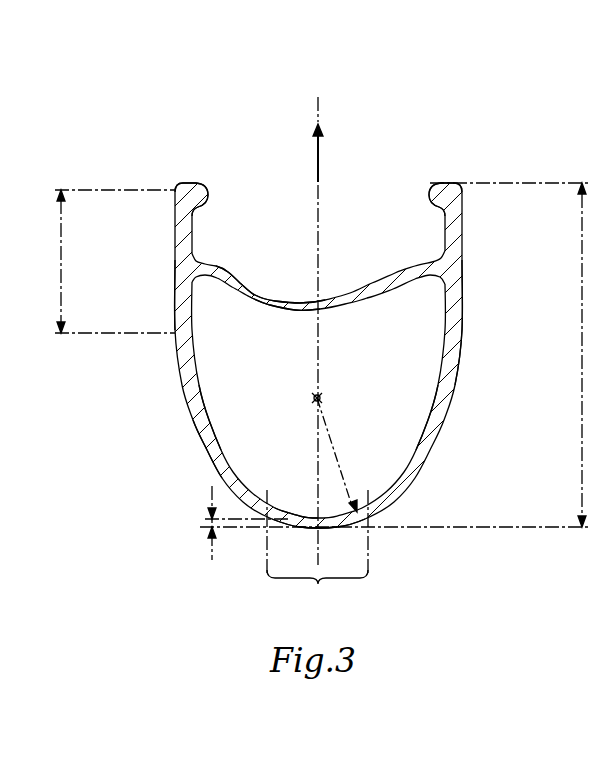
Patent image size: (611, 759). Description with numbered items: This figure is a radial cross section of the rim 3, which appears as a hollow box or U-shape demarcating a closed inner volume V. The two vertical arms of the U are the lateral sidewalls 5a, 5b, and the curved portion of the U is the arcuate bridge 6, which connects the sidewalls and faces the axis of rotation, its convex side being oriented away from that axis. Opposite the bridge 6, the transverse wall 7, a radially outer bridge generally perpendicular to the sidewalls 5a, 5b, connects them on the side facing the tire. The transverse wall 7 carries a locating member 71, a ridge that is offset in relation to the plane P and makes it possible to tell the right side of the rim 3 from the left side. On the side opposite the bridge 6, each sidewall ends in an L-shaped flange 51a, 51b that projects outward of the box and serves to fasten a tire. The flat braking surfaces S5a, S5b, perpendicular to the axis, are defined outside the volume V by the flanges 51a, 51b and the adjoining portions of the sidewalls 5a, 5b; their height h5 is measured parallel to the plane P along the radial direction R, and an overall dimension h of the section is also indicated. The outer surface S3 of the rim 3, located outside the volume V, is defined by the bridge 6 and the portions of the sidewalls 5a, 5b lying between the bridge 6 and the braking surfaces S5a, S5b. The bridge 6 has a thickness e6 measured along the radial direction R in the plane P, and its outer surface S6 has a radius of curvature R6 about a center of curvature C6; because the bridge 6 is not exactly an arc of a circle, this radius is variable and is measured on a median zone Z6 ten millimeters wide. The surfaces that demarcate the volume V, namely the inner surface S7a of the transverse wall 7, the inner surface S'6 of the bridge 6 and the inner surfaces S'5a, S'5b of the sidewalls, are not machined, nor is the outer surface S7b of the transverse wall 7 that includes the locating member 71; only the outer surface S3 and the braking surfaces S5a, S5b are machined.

The rim 3 is at (202, 119).
The lateral sidewall 5a is at (200, 421).
The lateral sidewall 5b is at (440, 418).
The bridge 6 is at (313, 528).
The transverse wall 7 is at (370, 282).
The locating member 71 is at (288, 290).
The L-shaped flange 51a is at (152, 190).
The L-shaped flange 51b is at (485, 183).
The outer surface S3 is at (470, 362).
The braking surface S5a is at (172, 290).
The braking surface S5b is at (474, 322).
The inner surface of sidewall S'5a is at (242, 417).
The inner surface of sidewall S'5b is at (396, 417).
The outer surface of bridge S6 is at (334, 536).
The inner surface of bridge S'6 is at (296, 481).
The inner surface of transverse wall S7a is at (288, 323).
The outer surface of transverse wall S7b is at (247, 272).
The total rim height h is at (395, 355).
The height of braking surfaces h5 is at (110, 261).
The thickness of bridge e6 is at (238, 523).
The median zone Z6 is at (317, 548).
The radius of curvature R6 is at (340, 455).
The center of curvature C6 is at (321, 396).
The plane P is at (324, 328).
The radial direction R is at (312, 159).
The inner volume V is at (215, 374).